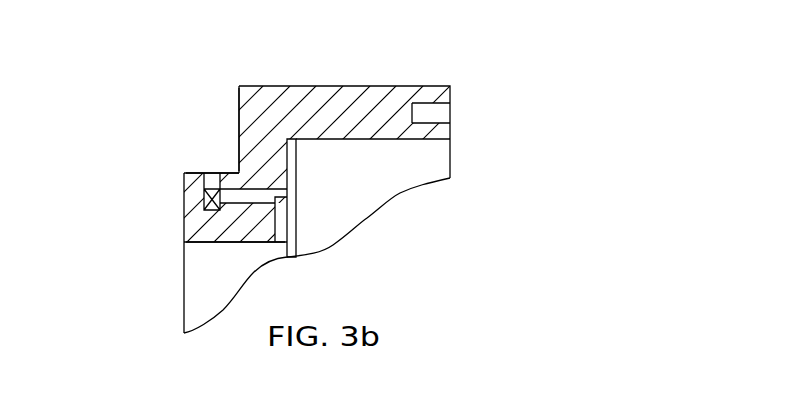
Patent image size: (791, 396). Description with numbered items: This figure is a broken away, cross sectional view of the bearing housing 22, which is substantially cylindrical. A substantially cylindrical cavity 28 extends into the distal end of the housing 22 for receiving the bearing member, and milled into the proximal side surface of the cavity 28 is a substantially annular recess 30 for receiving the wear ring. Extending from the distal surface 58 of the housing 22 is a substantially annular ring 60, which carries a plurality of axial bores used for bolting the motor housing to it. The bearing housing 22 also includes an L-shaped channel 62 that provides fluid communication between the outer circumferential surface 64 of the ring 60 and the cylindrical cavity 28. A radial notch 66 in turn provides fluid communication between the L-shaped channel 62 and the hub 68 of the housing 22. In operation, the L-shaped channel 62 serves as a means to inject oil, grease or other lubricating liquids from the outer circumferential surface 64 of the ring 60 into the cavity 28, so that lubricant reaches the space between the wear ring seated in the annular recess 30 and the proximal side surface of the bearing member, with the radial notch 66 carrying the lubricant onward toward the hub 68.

The bearing housing 22 is at (377, 98).
The cylindrical cavity 28 is at (392, 143).
The annular recess 30 is at (287, 158).
The distal surface 58 is at (239, 100).
The annular ring 60 is at (185, 173).
The L-shaped channel 62 is at (252, 197).
The outer circumferential surface 64 is at (228, 170).
The radial notch 66 is at (277, 214).
The hub 68 is at (258, 243).